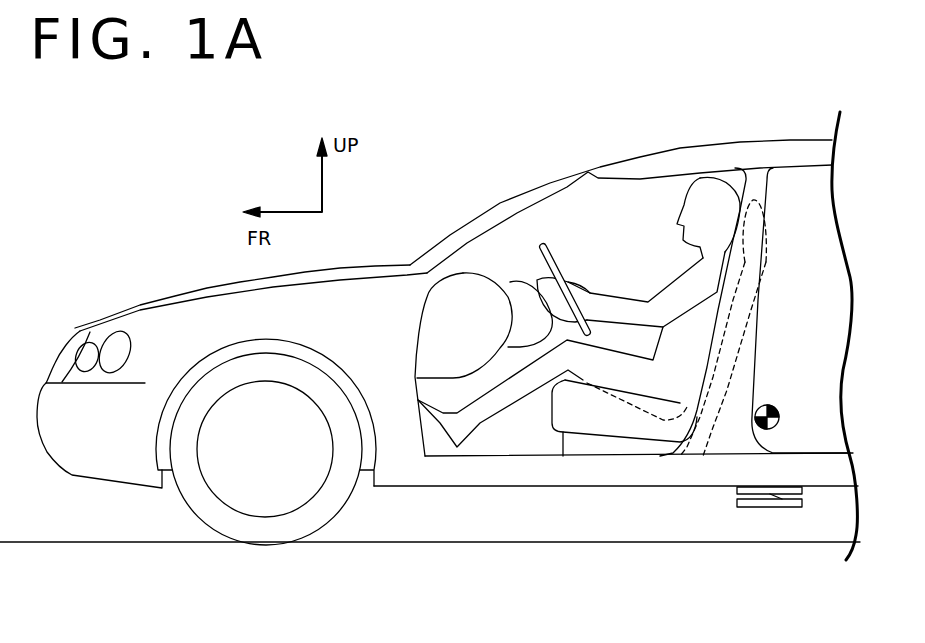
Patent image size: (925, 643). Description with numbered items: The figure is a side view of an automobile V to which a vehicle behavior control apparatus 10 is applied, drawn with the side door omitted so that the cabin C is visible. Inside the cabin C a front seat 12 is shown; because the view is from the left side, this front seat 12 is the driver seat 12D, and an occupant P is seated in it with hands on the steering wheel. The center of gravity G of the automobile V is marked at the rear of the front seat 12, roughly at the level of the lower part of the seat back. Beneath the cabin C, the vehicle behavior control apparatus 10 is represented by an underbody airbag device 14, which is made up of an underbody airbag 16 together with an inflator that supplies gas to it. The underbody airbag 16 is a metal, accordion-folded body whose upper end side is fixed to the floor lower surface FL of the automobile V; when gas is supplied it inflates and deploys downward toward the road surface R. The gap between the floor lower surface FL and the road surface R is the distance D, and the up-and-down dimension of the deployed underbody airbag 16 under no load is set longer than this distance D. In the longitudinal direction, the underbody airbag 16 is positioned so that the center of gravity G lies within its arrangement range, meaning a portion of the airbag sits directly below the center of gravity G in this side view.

The vehicle behavior control apparatus 10 is at (772, 550).
The front seat 12 is at (789, 275).
The driver seat 12D is at (690, 328).
The underbody airbag device 14 is at (797, 515).
The underbody airbag 16 is at (757, 508).
The automobile V is at (447, 337).
The occupant P is at (678, 191).
The cabin C is at (635, 238).
The center of gravity G is at (779, 412).
The floor lower surface FL is at (615, 487).
The road surface R is at (660, 542).
The distance D is at (523, 486).